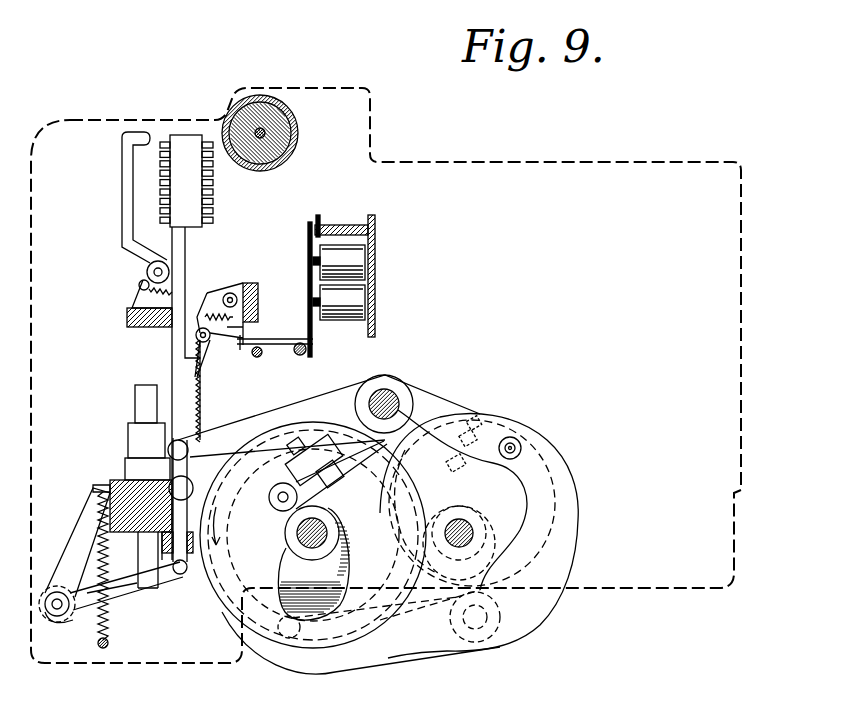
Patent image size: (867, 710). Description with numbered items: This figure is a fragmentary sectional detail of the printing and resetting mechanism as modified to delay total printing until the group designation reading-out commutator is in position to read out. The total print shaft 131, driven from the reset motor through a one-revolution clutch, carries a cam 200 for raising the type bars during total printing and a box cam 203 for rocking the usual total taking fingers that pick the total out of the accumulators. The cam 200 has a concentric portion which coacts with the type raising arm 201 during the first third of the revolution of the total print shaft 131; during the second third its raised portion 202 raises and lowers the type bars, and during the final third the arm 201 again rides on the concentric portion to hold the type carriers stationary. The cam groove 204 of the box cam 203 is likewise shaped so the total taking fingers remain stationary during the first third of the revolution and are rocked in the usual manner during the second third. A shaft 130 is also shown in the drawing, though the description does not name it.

The shaft 130 is at (473, 535).
The total print shaft 131 is at (300, 546).
The cam 200 is at (288, 578).
The type raising arm 201 is at (298, 463).
The raised portion 202 is at (347, 593).
The box cam 203 is at (268, 473).
The cam groove 204 is at (220, 575).